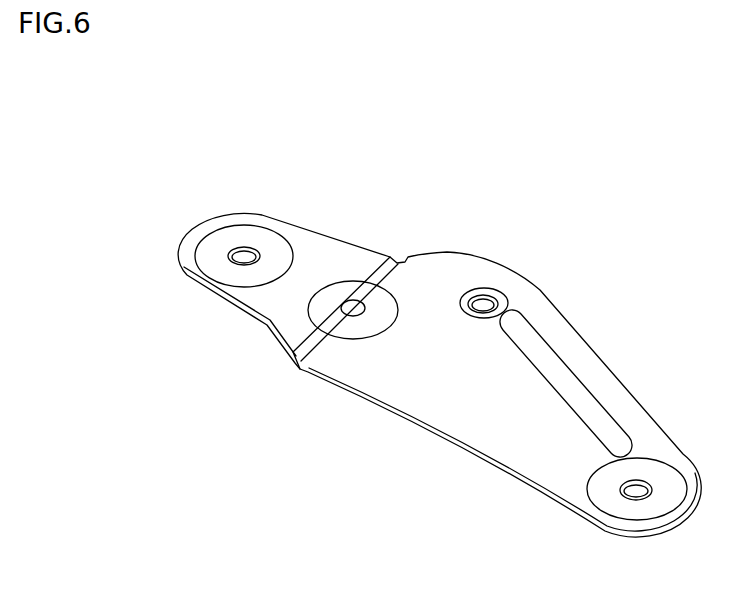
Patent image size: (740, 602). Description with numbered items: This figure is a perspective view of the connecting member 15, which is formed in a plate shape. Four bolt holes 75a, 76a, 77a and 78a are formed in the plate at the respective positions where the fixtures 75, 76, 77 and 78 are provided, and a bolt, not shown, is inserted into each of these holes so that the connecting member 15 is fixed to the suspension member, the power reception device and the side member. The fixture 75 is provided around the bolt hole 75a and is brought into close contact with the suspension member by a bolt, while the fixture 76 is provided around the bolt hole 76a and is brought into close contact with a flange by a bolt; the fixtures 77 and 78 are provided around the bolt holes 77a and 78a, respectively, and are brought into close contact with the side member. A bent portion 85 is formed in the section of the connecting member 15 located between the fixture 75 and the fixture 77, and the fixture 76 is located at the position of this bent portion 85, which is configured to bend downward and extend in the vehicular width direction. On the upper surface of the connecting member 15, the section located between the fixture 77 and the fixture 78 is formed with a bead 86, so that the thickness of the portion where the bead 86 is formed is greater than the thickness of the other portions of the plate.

The connecting member 15 is at (617, 247).
The fixture 75 is at (282, 247).
The bolt hole 75a is at (239, 247).
The fixture 76 is at (387, 290).
The bolt hole 76a is at (345, 300).
The fixture 77 is at (467, 288).
The bolt hole 77a is at (493, 297).
The fixture 78 is at (677, 482).
The bolt hole 78a is at (633, 480).
The bent portion 85 is at (300, 357).
The bead 86 is at (552, 357).